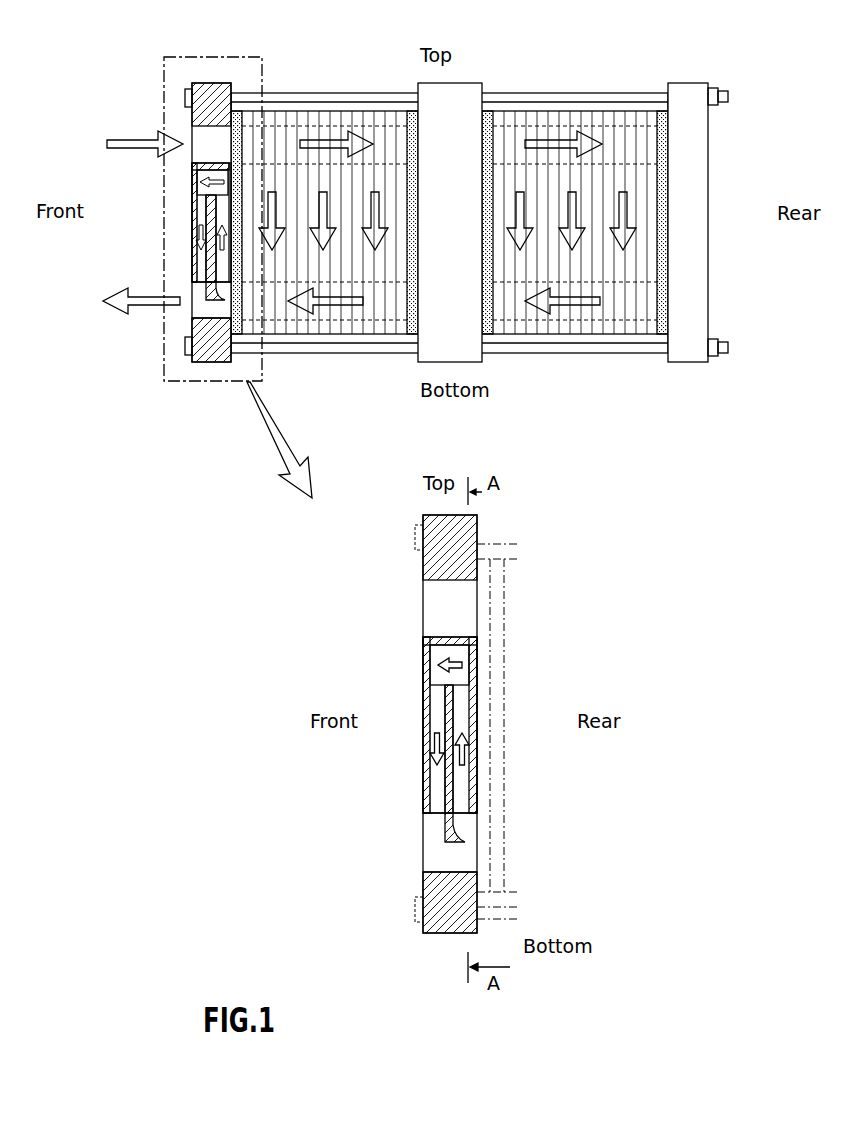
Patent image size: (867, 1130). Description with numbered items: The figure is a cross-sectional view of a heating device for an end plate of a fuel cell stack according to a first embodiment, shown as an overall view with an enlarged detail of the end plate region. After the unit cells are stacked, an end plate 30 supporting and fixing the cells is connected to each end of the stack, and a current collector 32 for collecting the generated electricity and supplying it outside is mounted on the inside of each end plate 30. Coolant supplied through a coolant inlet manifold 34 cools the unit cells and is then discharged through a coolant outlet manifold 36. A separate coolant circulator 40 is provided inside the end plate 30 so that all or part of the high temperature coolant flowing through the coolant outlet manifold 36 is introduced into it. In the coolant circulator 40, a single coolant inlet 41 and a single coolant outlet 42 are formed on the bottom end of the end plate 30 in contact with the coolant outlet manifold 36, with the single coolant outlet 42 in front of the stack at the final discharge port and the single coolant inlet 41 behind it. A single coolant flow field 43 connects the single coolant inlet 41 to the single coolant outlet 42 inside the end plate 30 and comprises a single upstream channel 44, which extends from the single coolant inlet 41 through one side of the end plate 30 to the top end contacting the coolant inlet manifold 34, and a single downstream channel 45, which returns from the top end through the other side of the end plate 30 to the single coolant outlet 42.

The end plate 30 is at (211, 363).
The current collector 32 is at (250, 140).
The coolant inlet manifold 34 is at (293, 126).
The coolant outlet manifold 36 is at (345, 316).
The coolant circulator 40 is at (192, 212).
The single coolant inlet 41 is at (228, 297).
The single coolant outlet 42 is at (200, 284).
The single coolant flow field 43 is at (245, 504).
The single upstream channel 44 is at (210, 266).
The single downstream channel 45 is at (198, 256).